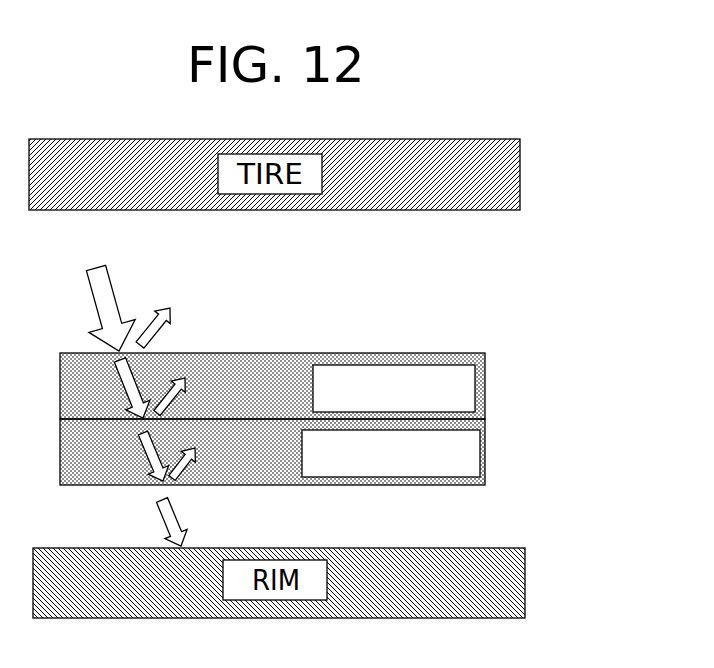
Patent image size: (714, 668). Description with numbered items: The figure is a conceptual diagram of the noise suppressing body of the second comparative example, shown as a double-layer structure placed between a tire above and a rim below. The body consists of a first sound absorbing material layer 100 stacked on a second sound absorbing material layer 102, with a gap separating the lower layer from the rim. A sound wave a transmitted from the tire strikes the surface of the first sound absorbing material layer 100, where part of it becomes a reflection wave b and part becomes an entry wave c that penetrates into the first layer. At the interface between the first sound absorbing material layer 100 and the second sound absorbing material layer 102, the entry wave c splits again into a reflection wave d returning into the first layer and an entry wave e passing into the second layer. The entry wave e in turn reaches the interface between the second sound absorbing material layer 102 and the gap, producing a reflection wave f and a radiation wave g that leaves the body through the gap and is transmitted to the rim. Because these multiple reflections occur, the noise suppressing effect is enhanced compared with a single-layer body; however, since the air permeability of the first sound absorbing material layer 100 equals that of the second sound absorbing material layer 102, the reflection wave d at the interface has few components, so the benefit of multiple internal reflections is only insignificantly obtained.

The first sound absorbing material layer 100 is at (486, 385).
The second sound absorbing material layer 102 is at (486, 448).
The sound wave a is at (92, 308).
The reflection wave b is at (164, 337).
The entry wave c is at (125, 385).
The reflection wave d is at (176, 393).
The entry wave e is at (152, 472).
The reflection wave f is at (192, 477).
The radiation wave g is at (167, 522).